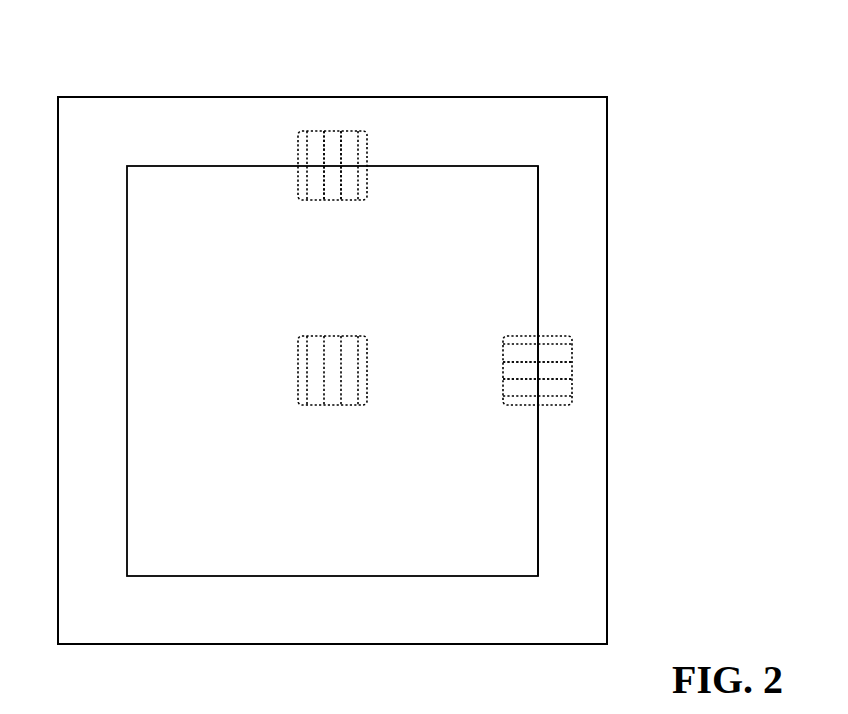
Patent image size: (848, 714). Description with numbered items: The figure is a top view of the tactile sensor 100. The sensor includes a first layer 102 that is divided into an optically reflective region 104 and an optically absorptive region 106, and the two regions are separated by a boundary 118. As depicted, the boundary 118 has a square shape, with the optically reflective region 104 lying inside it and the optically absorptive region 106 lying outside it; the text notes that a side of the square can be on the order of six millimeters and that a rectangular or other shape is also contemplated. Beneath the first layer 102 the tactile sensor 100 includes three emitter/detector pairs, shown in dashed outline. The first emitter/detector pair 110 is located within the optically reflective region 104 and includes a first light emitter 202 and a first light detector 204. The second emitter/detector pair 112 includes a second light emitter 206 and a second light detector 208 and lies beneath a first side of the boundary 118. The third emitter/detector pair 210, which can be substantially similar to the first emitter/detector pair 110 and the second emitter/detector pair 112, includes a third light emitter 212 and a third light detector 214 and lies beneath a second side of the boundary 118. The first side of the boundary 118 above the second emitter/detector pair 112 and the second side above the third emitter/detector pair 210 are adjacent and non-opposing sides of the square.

The tactile sensor 100 is at (573, 62).
The first layer 102 is at (160, 97).
The optically reflective region 104 is at (503, 285).
The optically absorptive region 106 is at (590, 167).
The first emitter/detector pair 110 is at (332, 519).
The second emitter/detector pair 112 is at (583, 370).
The boundary 118 is at (538, 242).
The first light emitter 202 is at (315, 395).
The first light detector 204 is at (350, 396).
The second light emitter 206 is at (565, 353).
The second light detector 208 is at (563, 388).
The third emitter/detector pair 210 is at (333, 123).
The third light emitter 212 is at (316, 140).
The third light detector 214 is at (333, 130).